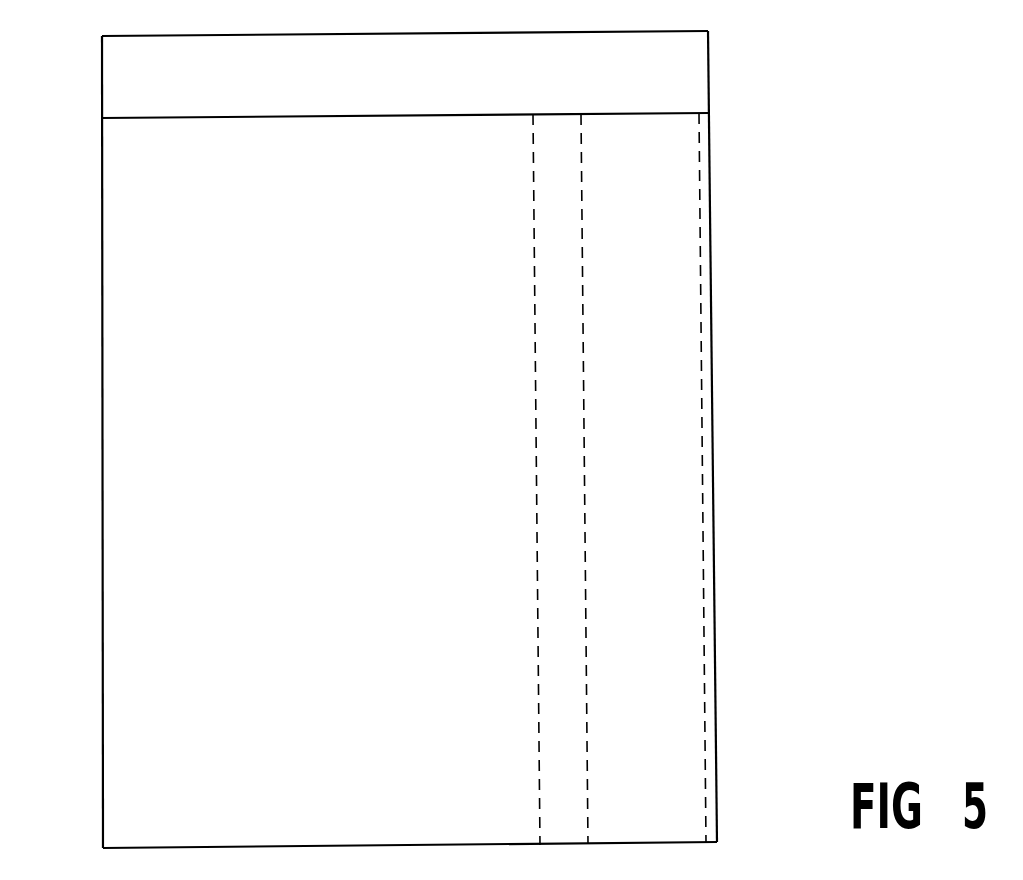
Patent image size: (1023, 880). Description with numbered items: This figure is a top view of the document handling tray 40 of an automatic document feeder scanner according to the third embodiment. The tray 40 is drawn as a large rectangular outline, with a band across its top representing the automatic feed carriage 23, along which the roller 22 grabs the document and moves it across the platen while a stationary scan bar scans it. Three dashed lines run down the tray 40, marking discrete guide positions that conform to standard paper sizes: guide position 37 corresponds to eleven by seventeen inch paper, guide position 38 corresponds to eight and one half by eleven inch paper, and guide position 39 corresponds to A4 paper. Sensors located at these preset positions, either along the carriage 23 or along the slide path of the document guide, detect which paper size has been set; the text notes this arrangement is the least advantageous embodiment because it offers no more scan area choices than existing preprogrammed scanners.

The roller 22 is at (703, 552).
The automatic feed carriage 23 is at (708, 70).
The guide position 37 is at (717, 838).
The guide position 38 is at (588, 836).
The guide position 39 is at (541, 836).
The document handling tray 40 is at (102, 305).